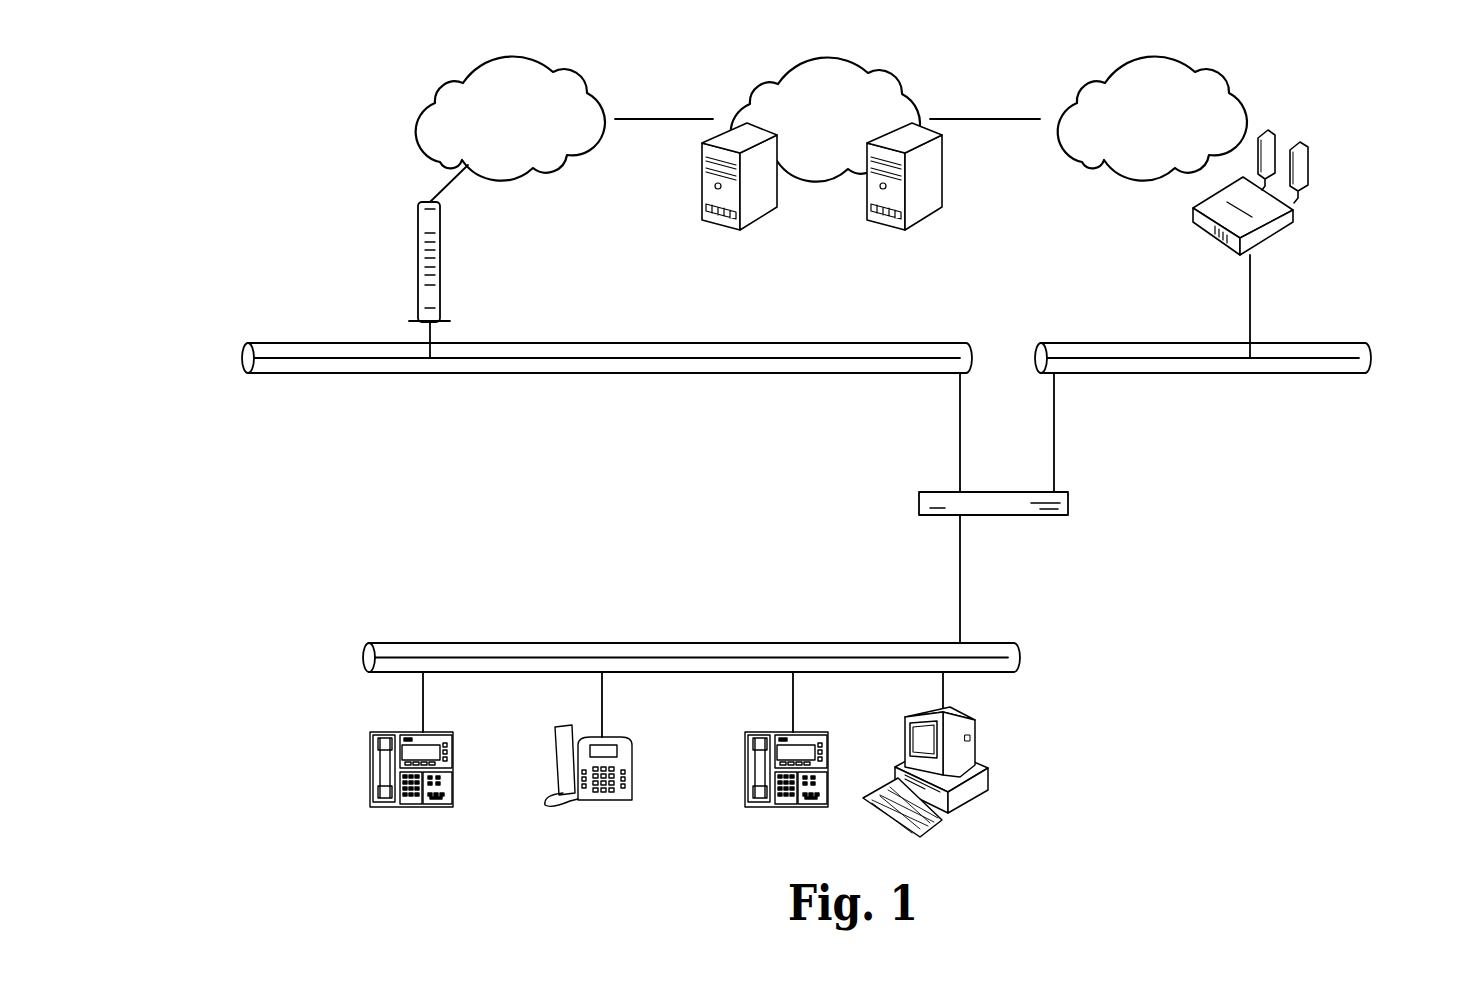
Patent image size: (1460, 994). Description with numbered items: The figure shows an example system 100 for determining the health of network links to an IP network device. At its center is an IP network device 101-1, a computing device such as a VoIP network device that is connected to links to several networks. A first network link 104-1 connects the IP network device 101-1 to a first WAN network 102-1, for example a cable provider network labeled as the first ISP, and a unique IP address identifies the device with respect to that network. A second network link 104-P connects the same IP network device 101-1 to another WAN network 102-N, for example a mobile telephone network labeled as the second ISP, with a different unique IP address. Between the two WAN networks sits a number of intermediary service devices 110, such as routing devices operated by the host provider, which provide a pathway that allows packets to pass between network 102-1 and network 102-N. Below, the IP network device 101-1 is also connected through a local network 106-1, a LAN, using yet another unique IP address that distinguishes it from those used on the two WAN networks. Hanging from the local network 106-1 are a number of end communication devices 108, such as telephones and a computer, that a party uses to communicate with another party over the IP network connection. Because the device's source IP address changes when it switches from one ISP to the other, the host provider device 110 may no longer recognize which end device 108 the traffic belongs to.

The system 100 is at (216, 76).
The network 102-1 is at (380, 150).
The network 102-N is at (1278, 109).
The intermediary service device 110 is at (944, 93).
The network link 104-1 is at (234, 358).
The network link 104-P is at (1378, 355).
The IP network device 101-1 is at (1096, 509).
The local network 106-1 is at (350, 657).
The end communication device 108 is at (1016, 762).